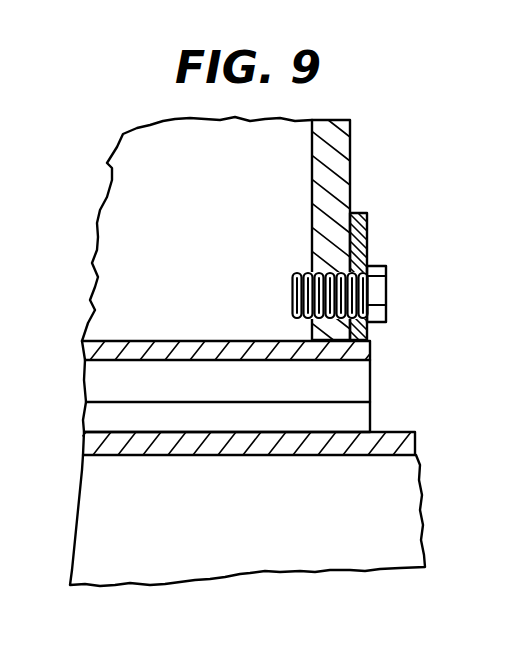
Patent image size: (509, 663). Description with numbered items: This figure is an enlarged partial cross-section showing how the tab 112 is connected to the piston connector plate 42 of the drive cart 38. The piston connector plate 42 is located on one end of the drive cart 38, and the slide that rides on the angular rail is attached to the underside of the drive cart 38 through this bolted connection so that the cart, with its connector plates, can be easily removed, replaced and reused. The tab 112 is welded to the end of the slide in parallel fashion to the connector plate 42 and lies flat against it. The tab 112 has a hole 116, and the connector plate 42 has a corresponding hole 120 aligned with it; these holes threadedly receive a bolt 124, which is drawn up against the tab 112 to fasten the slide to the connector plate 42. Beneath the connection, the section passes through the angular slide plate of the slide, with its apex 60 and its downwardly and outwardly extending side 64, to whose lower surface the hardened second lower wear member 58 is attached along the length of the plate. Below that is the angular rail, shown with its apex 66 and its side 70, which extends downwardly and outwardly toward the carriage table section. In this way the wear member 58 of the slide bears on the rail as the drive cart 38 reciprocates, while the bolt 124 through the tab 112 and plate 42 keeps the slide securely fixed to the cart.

The drive cart 38 is at (293, 129).
The piston connector plate 42 is at (350, 155).
The second lower wear member 58 is at (370, 420).
The apex 60 is at (370, 353).
The side 64 is at (370, 390).
The apex 66 is at (416, 447).
The side 70 is at (420, 498).
The tab 112 is at (366, 224).
The hole 116 is at (386, 291).
The hole 120 is at (318, 272).
The bolt 124 is at (386, 268).